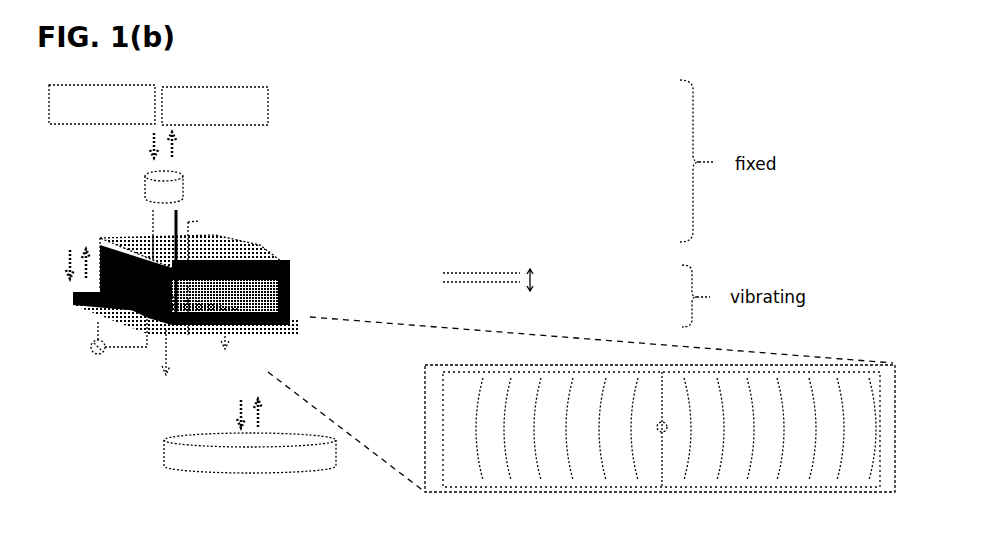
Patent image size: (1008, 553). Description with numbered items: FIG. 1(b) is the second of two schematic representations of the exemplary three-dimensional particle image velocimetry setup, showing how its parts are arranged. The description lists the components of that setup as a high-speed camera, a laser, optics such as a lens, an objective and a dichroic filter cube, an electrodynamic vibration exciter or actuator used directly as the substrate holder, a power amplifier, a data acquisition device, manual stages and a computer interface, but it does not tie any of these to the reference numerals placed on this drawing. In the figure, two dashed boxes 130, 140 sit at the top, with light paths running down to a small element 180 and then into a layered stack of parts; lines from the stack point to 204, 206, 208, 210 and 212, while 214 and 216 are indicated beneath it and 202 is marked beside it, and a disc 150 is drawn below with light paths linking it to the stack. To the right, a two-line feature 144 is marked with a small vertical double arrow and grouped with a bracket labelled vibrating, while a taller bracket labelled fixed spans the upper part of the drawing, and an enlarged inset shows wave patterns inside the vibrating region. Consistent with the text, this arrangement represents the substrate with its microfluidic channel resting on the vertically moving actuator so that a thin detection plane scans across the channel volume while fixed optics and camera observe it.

The light source 130 is at (102, 104).
The detector 140 is at (215, 106).
The vibrating membrane 144 is at (514, 281).
The sample 150 is at (250, 454).
The lens 180 is at (192, 183).
The sensor 202 is at (86, 342).
The rod 204 is at (221, 269).
The top plate 206 is at (253, 244).
The upper layer 208 is at (290, 280).
The housing body 210 is at (292, 303).
The base plate 212 is at (260, 300).
The aperture 214 is at (243, 356).
The output beam 216 is at (163, 367).